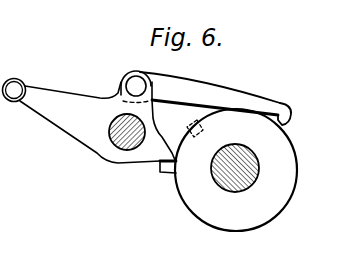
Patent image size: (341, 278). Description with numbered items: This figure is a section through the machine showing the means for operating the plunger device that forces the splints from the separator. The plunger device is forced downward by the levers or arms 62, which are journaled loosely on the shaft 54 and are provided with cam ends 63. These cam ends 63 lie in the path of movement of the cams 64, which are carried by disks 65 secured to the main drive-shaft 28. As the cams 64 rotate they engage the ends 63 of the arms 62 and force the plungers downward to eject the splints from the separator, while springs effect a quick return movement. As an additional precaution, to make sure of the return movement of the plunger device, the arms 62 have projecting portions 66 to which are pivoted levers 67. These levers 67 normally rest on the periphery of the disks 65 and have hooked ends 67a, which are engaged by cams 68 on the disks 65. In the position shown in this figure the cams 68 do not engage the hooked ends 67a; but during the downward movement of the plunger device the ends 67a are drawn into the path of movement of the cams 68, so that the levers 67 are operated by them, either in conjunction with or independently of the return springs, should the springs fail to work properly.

The main drive-shaft 28 is at (248, 189).
The shaft 54 is at (110, 137).
The levers or arms 62 is at (66, 97).
The cam ends 63 is at (163, 140).
The cams 64 is at (166, 175).
The disks 65 is at (228, 217).
The projecting portions 66 is at (118, 90).
The levers 67 is at (225, 91).
The hooked ends 67a is at (291, 117).
The cams 68 is at (196, 122).